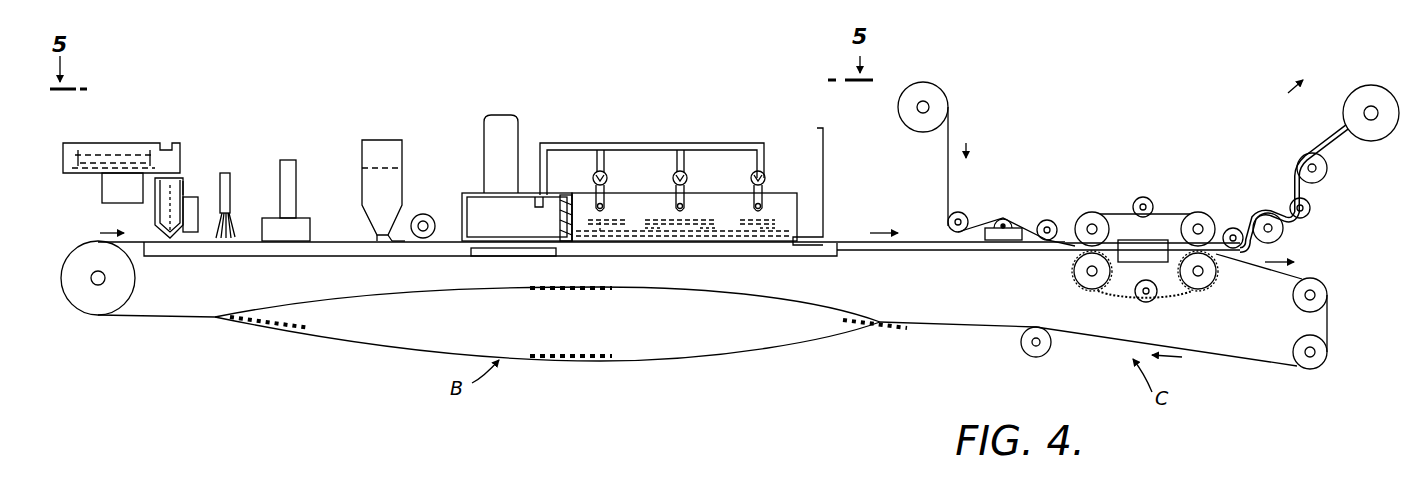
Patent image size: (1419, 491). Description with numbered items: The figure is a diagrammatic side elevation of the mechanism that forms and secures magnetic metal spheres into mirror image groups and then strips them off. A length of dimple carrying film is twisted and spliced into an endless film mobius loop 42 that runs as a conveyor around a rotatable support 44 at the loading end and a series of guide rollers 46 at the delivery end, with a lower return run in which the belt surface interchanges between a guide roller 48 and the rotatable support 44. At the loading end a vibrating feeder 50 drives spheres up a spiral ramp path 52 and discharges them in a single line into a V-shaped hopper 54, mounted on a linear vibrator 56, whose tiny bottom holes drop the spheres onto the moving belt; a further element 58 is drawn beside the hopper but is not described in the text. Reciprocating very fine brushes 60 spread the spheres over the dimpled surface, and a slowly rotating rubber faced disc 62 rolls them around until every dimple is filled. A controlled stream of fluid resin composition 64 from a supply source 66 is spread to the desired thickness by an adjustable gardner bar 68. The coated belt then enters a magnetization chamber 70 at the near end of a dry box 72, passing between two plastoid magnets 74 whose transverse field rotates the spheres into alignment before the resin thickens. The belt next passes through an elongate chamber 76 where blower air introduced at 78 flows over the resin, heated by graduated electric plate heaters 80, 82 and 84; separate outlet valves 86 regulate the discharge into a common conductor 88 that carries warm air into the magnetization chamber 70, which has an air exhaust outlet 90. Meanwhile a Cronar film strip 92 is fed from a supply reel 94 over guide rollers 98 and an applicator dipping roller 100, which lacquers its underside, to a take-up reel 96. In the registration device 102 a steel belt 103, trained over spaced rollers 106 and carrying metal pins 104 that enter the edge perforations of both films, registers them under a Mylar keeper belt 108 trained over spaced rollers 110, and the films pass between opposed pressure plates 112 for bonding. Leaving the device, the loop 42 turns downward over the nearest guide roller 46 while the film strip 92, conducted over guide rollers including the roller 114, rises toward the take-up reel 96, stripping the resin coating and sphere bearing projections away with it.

The endless film mobius loop 42 is at (162, 321).
The rotatable support 44 is at (90, 296).
The guide rollers 46 is at (1322, 342).
The guide roller 48 is at (1024, 352).
The vibrating feeder 50 is at (104, 192).
The spiral ramp path 52 is at (110, 153).
The V-shaped hopper 54 is at (178, 183).
The linear vibrator 56 is at (158, 216).
The nozzle support 58 is at (191, 233).
The reciprocating brushes 60 is at (229, 218).
The disc 62 is at (311, 230).
The fluid resin composition 64 is at (398, 235).
The supply source 66 is at (362, 178).
The gardner bar 68 is at (429, 215).
The magnetization chamber 70 is at (480, 207).
The dry box 72 is at (651, 190).
The plastoid magnets 74 is at (514, 254).
The elongate chamber 76 is at (566, 208).
The air introduction 78 is at (648, 228).
The electric plate heater 80 is at (606, 236).
The electric plate heater 82 is at (703, 228).
The electric plate heater 84 is at (768, 228).
The outlet valves 86 is at (605, 174).
The common conductor 88 is at (556, 143).
The air exhaust outlet 90 is at (484, 122).
The film strip 92 is at (953, 132).
The supply reel 94 is at (940, 90).
The take-up reel 96 is at (1362, 88).
The guide rollers 98 is at (965, 214).
The applicator dipping roller 100 is at (1004, 218).
The film registration device 102 is at (1153, 182).
The steel belt 103 is at (1188, 292).
The metal pins 104 is at (1170, 300).
The spaced rollers 106 is at (1072, 272).
The Mylar keeper belt 108 is at (1160, 215).
The spaced rollers 110 is at (1090, 211).
The pressure plates 112 is at (1128, 240).
The guide roller 114 is at (1240, 225).